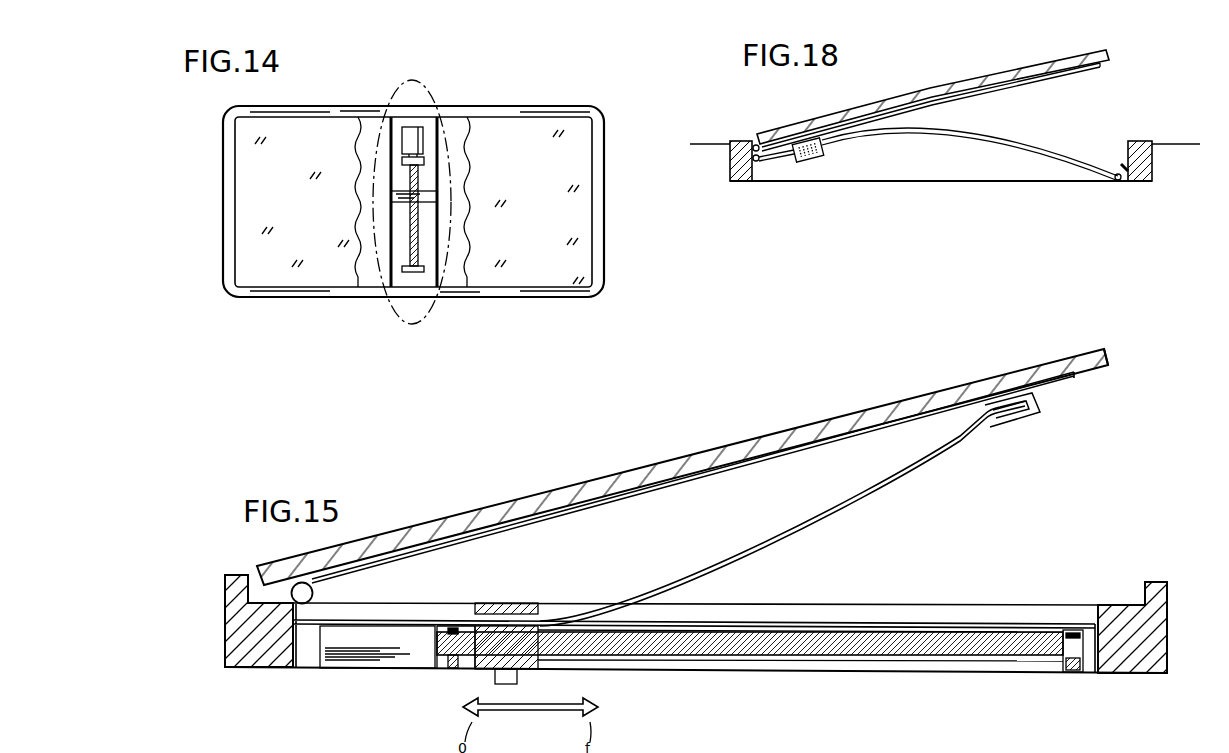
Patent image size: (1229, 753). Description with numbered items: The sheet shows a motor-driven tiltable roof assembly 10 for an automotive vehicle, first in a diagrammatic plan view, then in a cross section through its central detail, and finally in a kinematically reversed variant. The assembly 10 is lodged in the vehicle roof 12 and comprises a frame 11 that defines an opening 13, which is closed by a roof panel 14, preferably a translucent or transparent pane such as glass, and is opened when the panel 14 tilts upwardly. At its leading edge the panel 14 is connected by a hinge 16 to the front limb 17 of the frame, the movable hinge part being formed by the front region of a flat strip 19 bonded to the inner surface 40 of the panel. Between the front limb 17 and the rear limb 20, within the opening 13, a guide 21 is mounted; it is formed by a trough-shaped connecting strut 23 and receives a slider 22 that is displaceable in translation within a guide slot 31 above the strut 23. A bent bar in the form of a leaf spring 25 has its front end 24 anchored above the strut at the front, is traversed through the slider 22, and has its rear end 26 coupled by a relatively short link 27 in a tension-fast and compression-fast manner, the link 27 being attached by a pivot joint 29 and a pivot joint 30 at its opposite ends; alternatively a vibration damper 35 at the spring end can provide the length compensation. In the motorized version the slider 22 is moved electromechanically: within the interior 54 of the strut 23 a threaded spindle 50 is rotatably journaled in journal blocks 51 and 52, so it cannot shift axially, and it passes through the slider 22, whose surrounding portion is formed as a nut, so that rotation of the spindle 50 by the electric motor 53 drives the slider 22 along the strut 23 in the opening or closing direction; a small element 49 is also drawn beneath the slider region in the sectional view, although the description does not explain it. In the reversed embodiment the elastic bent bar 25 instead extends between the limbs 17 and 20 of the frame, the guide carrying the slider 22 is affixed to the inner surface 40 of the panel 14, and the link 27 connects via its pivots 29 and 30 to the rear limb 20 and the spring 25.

In FIG. 14, the tiltable roof assembly 10 is at (609, 230).
In FIG. 18, the tiltable roof assembly 10 is at (874, 104).
In FIG. 15, the tiltable roof assembly 10 is at (669, 444).
In FIG. 14, the frame 11 is at (586, 296).
In FIG. 15, the frame 11 is at (1124, 676).
In FIG. 18, the roof 12 is at (1168, 145).
In FIG. 18, the opening 13 is at (1072, 127).
In FIG. 14, the roof panel 14 is at (529, 232).
In FIG. 18, the roof panel 14 is at (930, 88).
In FIG. 15, the roof panel 14 is at (498, 502).
In FIG. 18, the hinge 16 is at (755, 145).
In FIG. 15, the hinge 16 is at (313, 589).
In FIG. 14, the front limb 17 is at (335, 108).
In FIG. 18, the front limb 17 is at (745, 166).
In FIG. 15, the front limb 17 is at (257, 642).
In FIG. 15, the flat strip 19 is at (813, 450).
In FIG. 14, the rear limb 20 is at (283, 292).
In FIG. 18, the rear limb 20 is at (1154, 175).
In FIG. 15, the rear limb 20 is at (1145, 646).
In FIG. 18, the guide 21 is at (1066, 80).
In FIG. 14, the slider 22 is at (392, 197).
In FIG. 18, the slider 22 is at (812, 168).
In FIG. 15, the slider 22 is at (501, 596).
In FIG. 15, the connecting strut 23 is at (942, 676).
In FIG. 18, the front end of bent bar 24 is at (765, 162).
In FIG. 18, the leaf spring 25 is at (940, 137).
In FIG. 15, the leaf spring 25 is at (874, 497).
In FIG. 18, the rear end of leaf spring 26 is at (1090, 181).
In FIG. 18, the link 27 is at (1122, 185).
In FIG. 18, the pivot joint 29 is at (1123, 164).
In FIG. 18, the pivot joint 30 is at (1117, 181).
In FIG. 18, the guide slot 31 is at (821, 158).
In FIG. 15, the vibration damper 35 is at (1017, 426).
In FIG. 18, the inner surface 40 is at (1106, 62).
In FIG. 15, the inner surface 40 is at (1092, 373).
In FIG. 15, the slide guide 49 is at (518, 675).
In FIG. 14, the threaded spindle 50 is at (418, 178).
In FIG. 15, the threaded spindle 50 is at (842, 658).
In FIG. 14, the journal block 51 is at (421, 160).
In FIG. 15, the journal block 51 is at (448, 662).
In FIG. 14, the journal block 52 is at (419, 273).
In FIG. 15, the journal block 52 is at (1070, 674).
In FIG. 14, the electric motor 53 is at (402, 140).
In FIG. 15, the electric motor 53 is at (380, 658).
In FIG. 15, the interior 54 is at (752, 663).